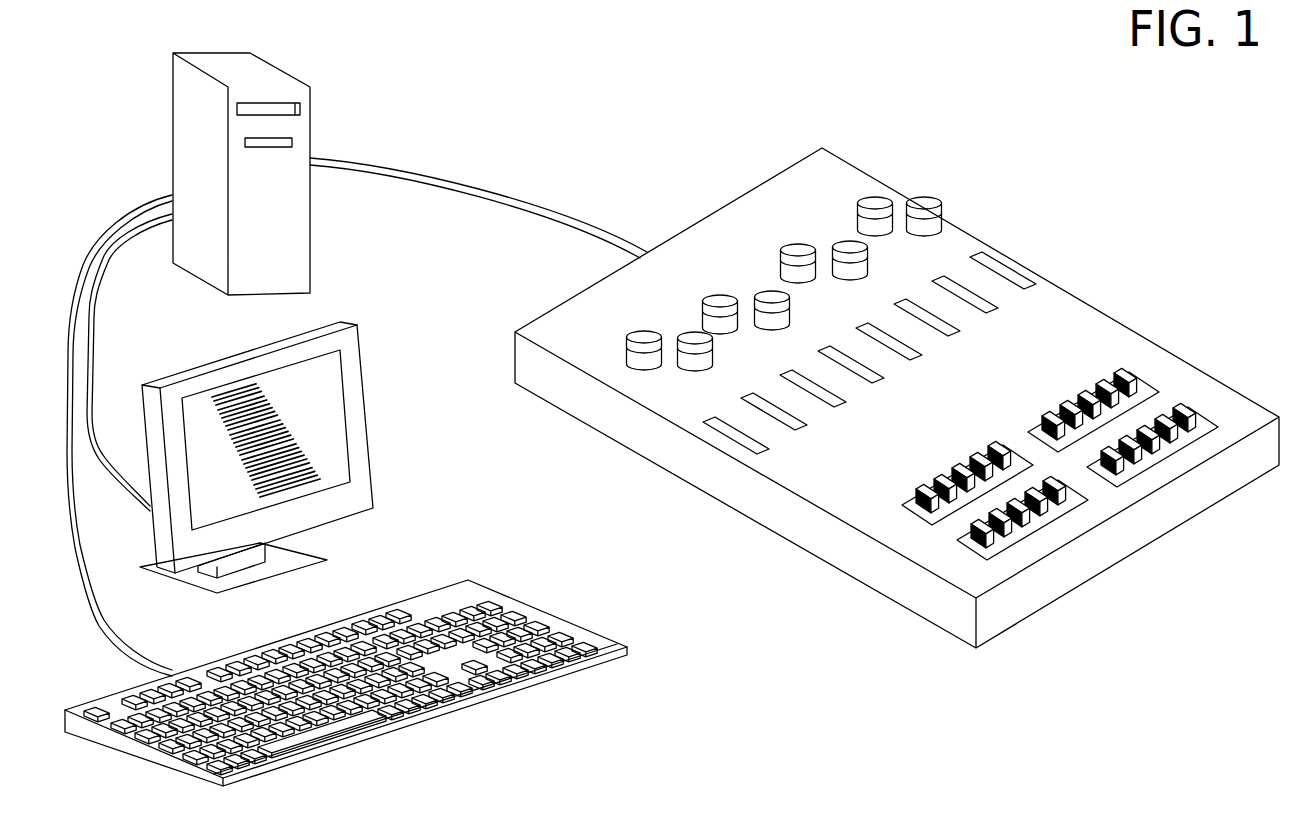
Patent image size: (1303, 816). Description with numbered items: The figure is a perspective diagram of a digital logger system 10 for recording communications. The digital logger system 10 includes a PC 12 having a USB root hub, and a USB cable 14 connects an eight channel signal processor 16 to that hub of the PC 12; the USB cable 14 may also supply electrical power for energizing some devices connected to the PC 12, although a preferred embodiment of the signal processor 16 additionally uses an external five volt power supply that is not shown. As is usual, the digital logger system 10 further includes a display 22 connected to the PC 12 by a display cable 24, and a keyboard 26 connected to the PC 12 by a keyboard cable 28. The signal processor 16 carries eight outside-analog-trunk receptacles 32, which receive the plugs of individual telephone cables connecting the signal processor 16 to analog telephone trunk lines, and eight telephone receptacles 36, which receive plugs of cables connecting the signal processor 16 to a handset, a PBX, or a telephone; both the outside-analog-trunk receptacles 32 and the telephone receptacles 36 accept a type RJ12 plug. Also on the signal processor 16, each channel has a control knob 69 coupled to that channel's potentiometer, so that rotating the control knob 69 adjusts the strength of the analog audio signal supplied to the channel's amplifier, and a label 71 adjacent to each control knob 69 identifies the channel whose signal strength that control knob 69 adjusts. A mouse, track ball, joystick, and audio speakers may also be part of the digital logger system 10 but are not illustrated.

The digital logger system 10 is at (1040, 116).
The PC 12 is at (178, 80).
The USB cable 14 is at (452, 160).
The signal processor 16 is at (752, 488).
The display 22 is at (176, 370).
The display cable 24 is at (128, 497).
The keyboard 26 is at (440, 597).
The keyboard cable 28 is at (96, 610).
The outside-analog-trunk receptacles 32 is at (962, 477).
The telephone receptacles 36 is at (1067, 507).
The control knob 69 is at (694, 332).
The label 71 is at (757, 403).